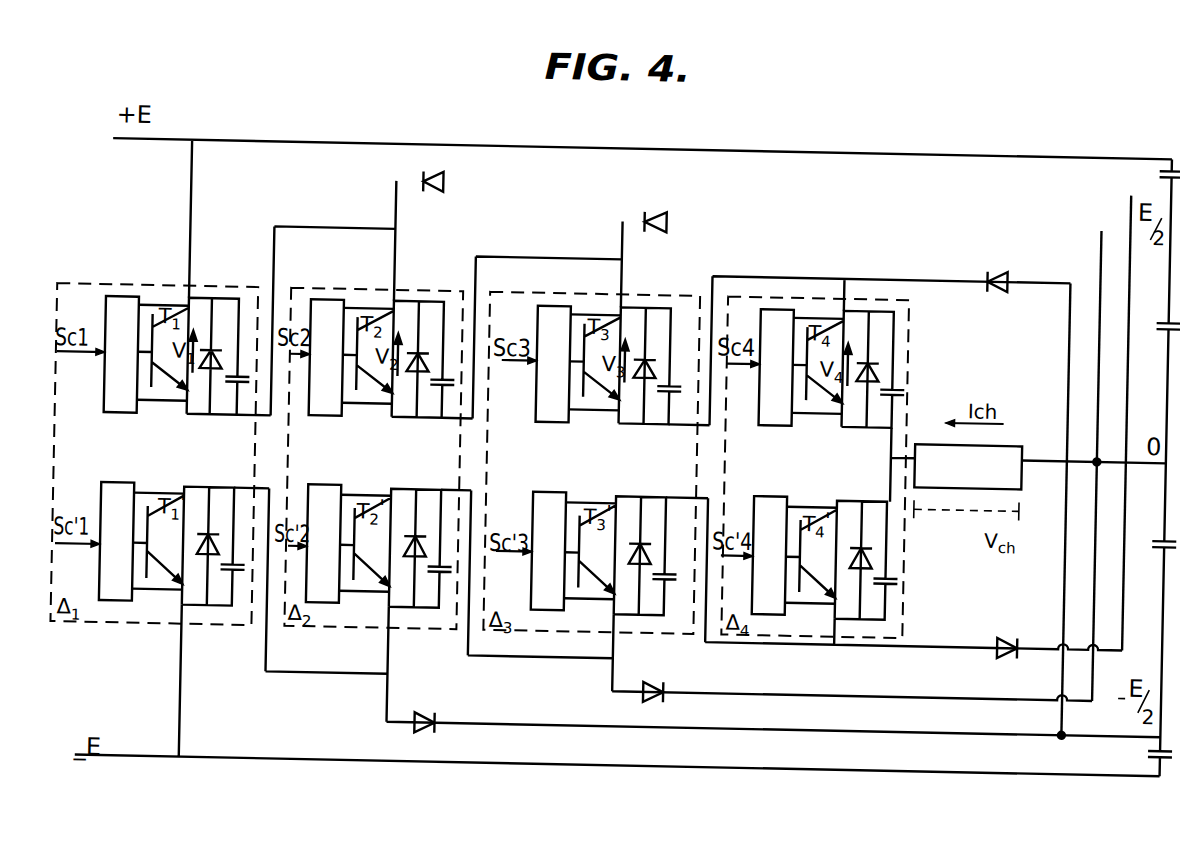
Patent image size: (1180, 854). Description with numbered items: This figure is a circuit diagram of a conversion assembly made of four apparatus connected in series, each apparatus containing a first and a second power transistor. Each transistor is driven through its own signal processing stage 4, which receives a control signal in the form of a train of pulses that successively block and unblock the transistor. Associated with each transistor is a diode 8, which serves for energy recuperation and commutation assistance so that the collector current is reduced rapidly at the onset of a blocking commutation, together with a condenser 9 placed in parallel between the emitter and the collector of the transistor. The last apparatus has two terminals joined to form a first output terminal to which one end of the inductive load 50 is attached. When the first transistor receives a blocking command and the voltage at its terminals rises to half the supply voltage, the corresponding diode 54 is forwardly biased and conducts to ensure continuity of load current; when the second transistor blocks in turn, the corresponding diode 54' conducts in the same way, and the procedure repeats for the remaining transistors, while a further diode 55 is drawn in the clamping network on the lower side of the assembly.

The signal processing stage 4 is at (771, 422).
The diode 8 is at (224, 340).
The condenser 9 is at (244, 366).
The inductive load 50 is at (936, 438).
The diode 54 is at (456, 193).
The diode 54' is at (678, 236).
The clamping diode 55 is at (1010, 638).